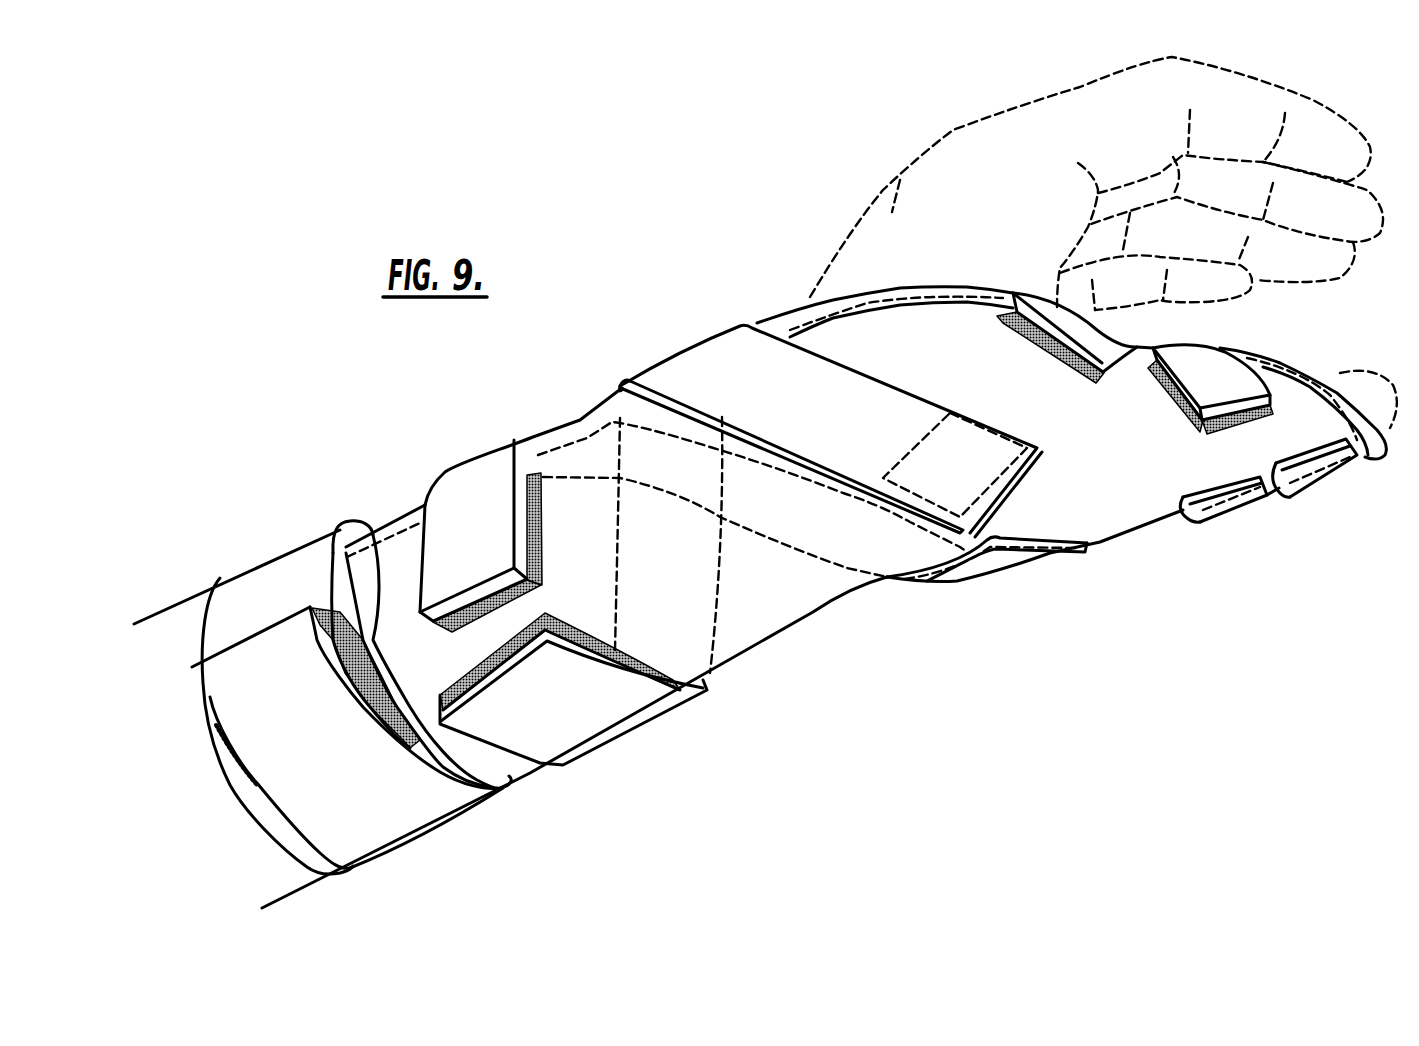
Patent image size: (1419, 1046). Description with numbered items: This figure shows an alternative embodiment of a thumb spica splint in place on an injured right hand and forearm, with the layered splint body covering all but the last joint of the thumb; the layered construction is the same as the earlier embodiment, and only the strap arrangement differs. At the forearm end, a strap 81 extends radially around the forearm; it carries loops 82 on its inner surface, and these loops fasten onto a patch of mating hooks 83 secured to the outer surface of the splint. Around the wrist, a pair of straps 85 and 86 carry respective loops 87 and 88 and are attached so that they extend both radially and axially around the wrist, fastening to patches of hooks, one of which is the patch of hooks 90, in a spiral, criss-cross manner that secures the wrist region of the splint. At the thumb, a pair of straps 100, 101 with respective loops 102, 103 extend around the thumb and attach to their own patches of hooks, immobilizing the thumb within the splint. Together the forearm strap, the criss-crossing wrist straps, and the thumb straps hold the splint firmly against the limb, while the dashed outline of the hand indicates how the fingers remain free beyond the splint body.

The strap 81 is at (260, 578).
The loops 82 is at (381, 562).
The patch of mating hooks 83 is at (325, 655).
The strap 85 is at (1007, 567).
The strap 86 is at (743, 360).
The loops 87 is at (537, 548).
The loops 88 is at (660, 670).
The patch of hooks 90 is at (585, 633).
The strap 100 is at (1333, 465).
The strap 101 is at (1238, 502).
The loops 102 is at (1232, 390).
The loops 103 is at (1077, 323).